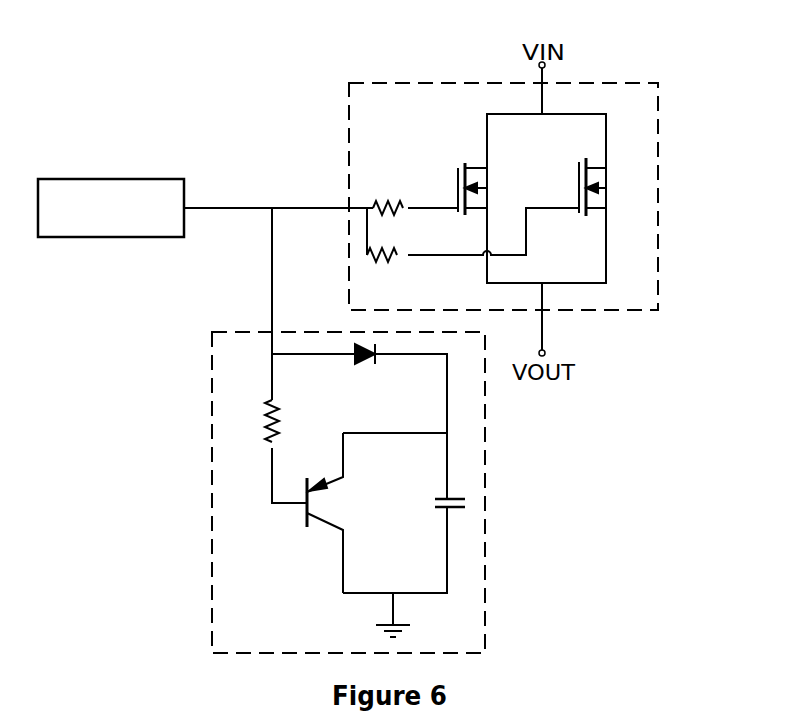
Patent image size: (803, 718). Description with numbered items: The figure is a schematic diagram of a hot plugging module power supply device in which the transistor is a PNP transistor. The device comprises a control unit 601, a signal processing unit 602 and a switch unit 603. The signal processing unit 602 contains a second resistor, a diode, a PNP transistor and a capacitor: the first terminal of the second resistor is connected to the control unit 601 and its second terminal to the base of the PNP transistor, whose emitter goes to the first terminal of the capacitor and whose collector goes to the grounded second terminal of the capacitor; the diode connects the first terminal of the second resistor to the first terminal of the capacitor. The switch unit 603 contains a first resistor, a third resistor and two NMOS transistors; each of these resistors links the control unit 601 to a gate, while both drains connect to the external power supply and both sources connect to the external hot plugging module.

The control unit 601 is at (113, 179).
The signal processing unit 602 is at (485, 493).
The switch unit 603 is at (655, 197).